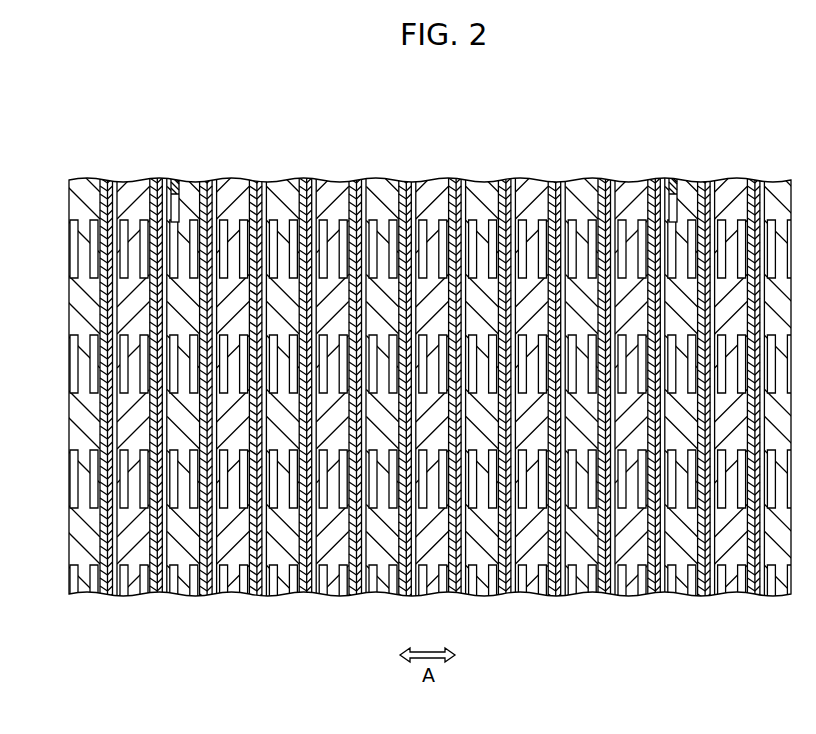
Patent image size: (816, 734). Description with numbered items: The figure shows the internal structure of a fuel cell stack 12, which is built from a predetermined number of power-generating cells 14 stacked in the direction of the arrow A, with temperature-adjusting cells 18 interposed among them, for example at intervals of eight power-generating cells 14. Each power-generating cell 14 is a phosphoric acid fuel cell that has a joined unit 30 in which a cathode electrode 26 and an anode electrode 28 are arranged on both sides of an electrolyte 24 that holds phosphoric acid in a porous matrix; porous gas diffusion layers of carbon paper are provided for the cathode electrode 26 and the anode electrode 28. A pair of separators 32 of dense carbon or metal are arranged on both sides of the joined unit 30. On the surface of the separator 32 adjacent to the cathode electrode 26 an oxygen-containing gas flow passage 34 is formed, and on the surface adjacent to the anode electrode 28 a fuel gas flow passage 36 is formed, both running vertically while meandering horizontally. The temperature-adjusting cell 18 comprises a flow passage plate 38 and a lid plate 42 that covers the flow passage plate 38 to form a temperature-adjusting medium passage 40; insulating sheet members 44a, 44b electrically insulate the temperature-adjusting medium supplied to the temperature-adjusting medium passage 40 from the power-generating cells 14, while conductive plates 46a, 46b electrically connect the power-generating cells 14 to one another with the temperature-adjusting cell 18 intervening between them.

The fuel cell stack 12 is at (734, 126).
The power-generating cell 14 is at (365, 372).
The temperature-adjusting cell 18 is at (186, 171).
The electrolyte 24 is at (355, 592).
The cathode electrode 26 is at (350, 590).
The anode electrode 28 is at (362, 572).
The joined unit 30 is at (368, 391).
The separator 32 is at (333, 172).
The oxygen-containing gas flow passage 34 is at (343, 505).
The fuel gas flow passage 36 is at (400, 567).
The flow passage plate 38 is at (193, 590).
The temperature-adjusting medium passage 40 is at (163, 430).
The lid plate 42 is at (173, 588).
The insulating sheet member 44a is at (203, 593).
The insulating sheet member 44b is at (160, 472).
The conductive plate 46a is at (222, 597).
The conductive plate 46b is at (150, 500).